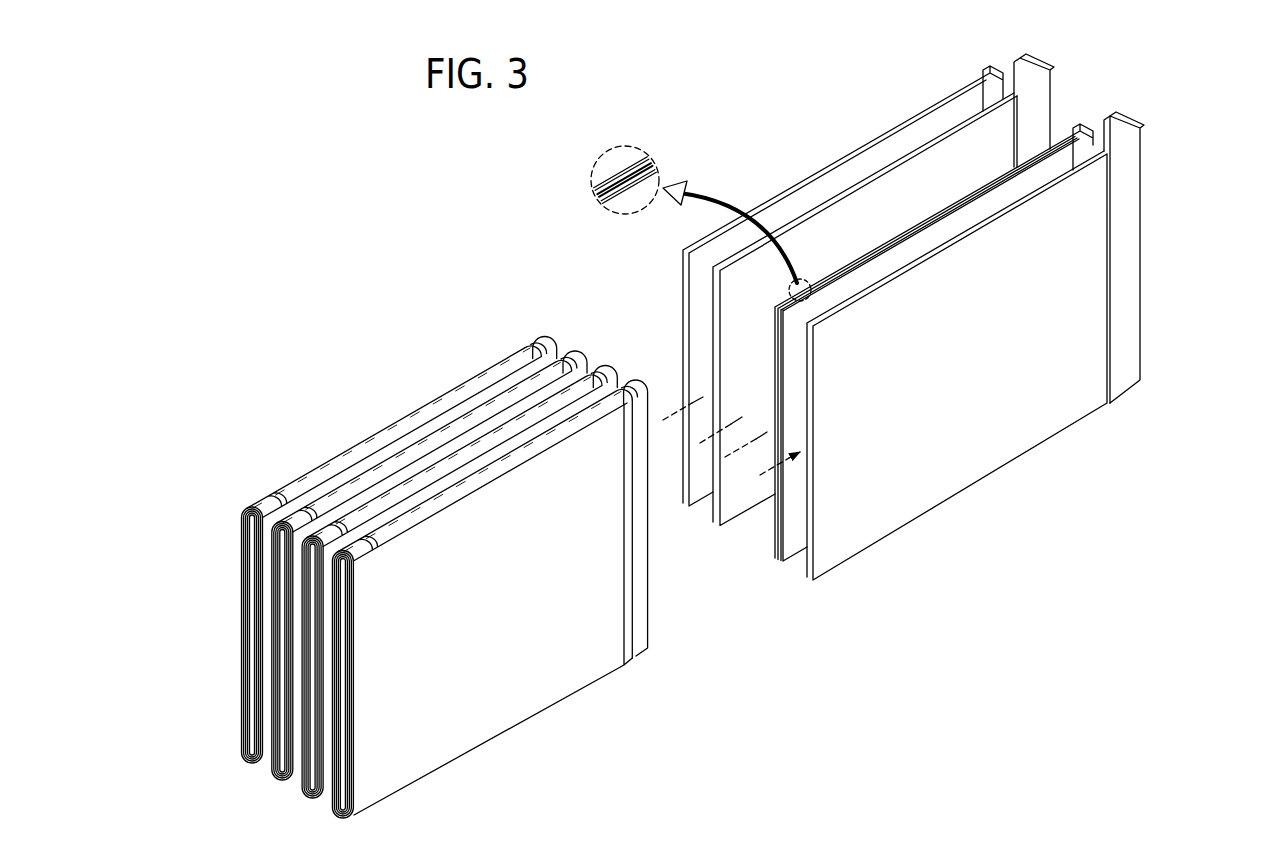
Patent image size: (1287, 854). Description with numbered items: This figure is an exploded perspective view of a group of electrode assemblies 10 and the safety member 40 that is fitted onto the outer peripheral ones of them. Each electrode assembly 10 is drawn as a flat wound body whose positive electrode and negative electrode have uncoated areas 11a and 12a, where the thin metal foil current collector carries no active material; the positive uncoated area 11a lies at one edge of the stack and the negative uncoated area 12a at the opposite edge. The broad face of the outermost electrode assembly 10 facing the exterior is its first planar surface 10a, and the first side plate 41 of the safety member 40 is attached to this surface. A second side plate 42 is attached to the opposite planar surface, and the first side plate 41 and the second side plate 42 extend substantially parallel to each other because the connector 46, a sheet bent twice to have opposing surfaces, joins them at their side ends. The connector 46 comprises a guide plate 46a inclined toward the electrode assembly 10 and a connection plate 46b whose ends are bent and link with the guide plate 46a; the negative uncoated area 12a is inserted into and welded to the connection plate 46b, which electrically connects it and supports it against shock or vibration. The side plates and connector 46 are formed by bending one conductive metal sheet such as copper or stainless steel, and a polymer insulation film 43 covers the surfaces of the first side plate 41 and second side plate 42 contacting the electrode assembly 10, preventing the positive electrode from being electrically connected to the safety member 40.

The electrode assembly 10 is at (380, 426).
The first planar surface 10a is at (545, 689).
The positive uncoated area 11a is at (263, 503).
The negative uncoated area 12a is at (540, 343).
The safety member 40 is at (925, 515).
The first side plate 41 is at (1013, 443).
The second side plate 42 is at (900, 237).
The insulation film 43 is at (847, 262).
The connector 46 is at (1173, 257).
The guide plate 46a is at (1110, 280).
The connection plate 46b is at (1130, 220).